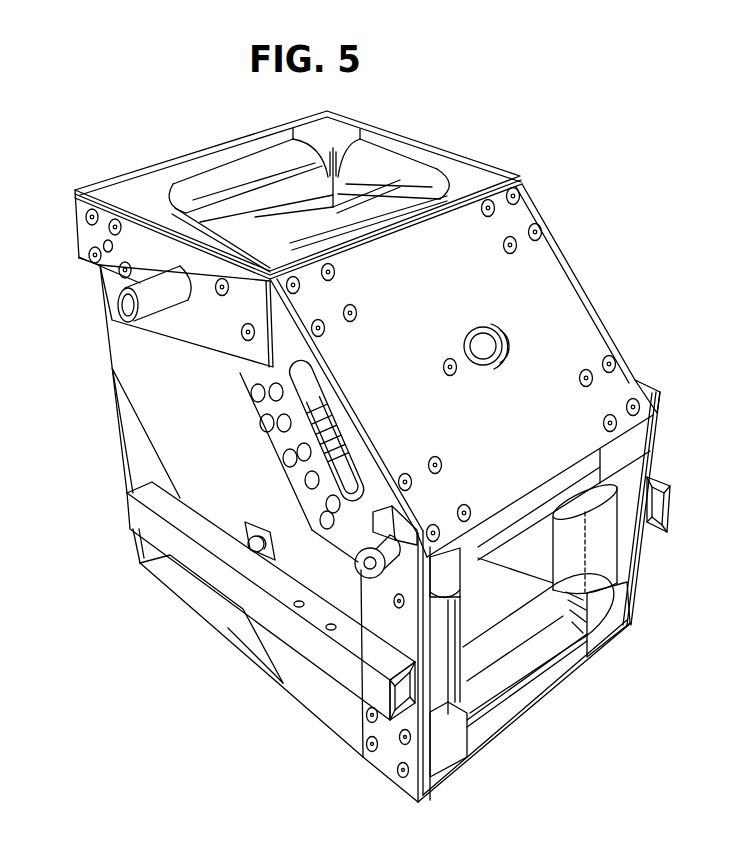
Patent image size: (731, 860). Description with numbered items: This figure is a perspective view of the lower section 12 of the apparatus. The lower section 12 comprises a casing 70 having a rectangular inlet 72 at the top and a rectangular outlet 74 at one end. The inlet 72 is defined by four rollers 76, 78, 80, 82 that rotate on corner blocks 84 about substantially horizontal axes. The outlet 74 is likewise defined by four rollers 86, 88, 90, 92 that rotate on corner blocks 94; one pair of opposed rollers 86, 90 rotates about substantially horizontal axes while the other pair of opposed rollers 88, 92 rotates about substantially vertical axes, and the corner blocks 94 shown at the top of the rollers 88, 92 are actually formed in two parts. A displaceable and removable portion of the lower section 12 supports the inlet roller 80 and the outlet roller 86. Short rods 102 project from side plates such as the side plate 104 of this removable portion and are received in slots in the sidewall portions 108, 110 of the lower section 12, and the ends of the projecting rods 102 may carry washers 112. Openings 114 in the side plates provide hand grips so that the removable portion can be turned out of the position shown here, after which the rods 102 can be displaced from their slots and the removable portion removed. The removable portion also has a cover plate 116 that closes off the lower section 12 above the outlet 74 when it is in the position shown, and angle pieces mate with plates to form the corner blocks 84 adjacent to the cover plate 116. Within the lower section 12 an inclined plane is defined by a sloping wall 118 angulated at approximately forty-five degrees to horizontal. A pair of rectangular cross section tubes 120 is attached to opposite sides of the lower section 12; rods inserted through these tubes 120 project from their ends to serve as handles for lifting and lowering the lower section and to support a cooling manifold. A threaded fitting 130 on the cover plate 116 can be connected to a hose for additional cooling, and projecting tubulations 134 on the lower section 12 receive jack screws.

The lower section 12 is at (574, 216).
The casing 70 is at (138, 404).
The rectangular inlet 72 is at (283, 226).
The rectangular outlet 74 is at (530, 592).
The roller 76 is at (230, 172).
The roller 78 is at (390, 160).
The roller 80 is at (354, 240).
The roller 82 is at (96, 272).
The corner block 84 is at (128, 190).
The roller 86 is at (547, 503).
The roller 88 is at (601, 571).
The roller 90 is at (518, 684).
The roller 92 is at (400, 637).
The corner block 94 is at (628, 447).
The short rod 102 is at (355, 554).
The side plate 104 is at (341, 423).
The sidewall portion 108 is at (387, 760).
The sidewall portion 110 is at (652, 386).
The washer 112 is at (407, 520).
The opening 114 is at (313, 397).
The cover plate 116 is at (427, 295).
The sloping wall 118 is at (161, 457).
The rectangular cross section tube 120 is at (210, 575).
The fitting 130 is at (487, 372).
The projecting tubulation 134 is at (157, 323).